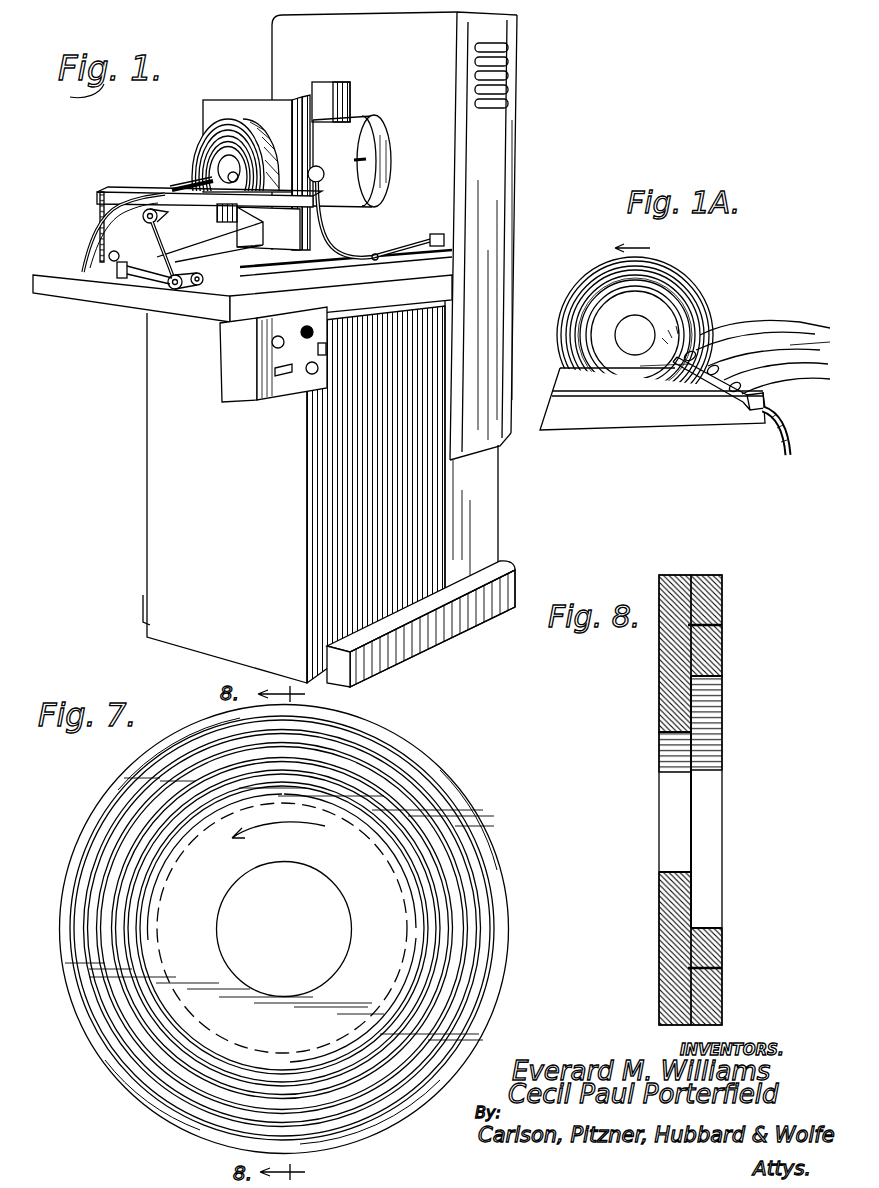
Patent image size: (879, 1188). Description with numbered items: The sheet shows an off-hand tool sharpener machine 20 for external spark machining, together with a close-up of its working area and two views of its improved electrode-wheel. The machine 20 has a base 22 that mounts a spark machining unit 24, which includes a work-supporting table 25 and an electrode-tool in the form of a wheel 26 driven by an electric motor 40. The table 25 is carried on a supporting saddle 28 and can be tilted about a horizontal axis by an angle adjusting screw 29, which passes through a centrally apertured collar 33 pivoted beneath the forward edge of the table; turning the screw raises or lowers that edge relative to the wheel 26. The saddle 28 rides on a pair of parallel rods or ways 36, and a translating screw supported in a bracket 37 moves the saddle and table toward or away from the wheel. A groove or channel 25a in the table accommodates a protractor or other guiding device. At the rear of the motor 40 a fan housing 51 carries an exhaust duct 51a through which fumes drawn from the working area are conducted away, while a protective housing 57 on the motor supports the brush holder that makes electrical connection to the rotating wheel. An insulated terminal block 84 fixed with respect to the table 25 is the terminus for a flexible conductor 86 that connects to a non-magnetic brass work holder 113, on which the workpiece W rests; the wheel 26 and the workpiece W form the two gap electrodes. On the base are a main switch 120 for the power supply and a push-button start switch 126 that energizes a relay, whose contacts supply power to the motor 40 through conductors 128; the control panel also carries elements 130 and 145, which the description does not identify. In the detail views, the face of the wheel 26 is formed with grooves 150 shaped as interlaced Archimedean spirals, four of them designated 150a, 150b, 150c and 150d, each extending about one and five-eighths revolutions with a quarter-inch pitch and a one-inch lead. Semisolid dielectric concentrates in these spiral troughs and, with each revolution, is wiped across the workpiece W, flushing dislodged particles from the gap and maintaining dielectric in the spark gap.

In FIG. 1, the machine 20 is at (87, 317).
In FIG. 1, the base 22 is at (160, 419).
In FIG. 1, the spark machining unit 24 is at (178, 153).
In FIG. 1, the work-supporting table 25 is at (137, 188).
In FIG. 1A, the work-supporting table 25 is at (652, 414).
In FIG. 1A, the groove or channel 25a is at (607, 393).
In FIG. 1, the electrode-wheel 26 is at (203, 135).
In FIG. 1A, the electrode-wheel 26 is at (663, 263).
In FIG. 7, the electrode-wheel 26 is at (404, 745).
In FIG. 8, the electrode-wheel 26 is at (660, 697).
In FIG. 1, the saddle 28 is at (228, 233).
In FIG. 1, the angle adjusting screw 29 is at (162, 240).
In FIG. 1, the centrally apertured collar 33 is at (163, 213).
In FIG. 1, the rods or ways 36 is at (157, 287).
In FIG. 1, the bracket 37 is at (112, 280).
In FIG. 1, the electric motor 40 is at (366, 157).
In FIG. 1, the fan housing 51 is at (388, 167).
In FIG. 1, the exhaust duct 51a is at (343, 97).
In FIG. 1, the protective housing 57 is at (243, 107).
In FIG. 1, the insulated terminal block 84 is at (102, 192).
In FIG. 1, the flexible conductor 86 is at (102, 230).
In FIG. 1A, the flexible conductor 86 is at (777, 440).
In FIG. 1, the work holder 113 is at (190, 182).
In FIG. 1A, the work holder 113 is at (722, 403).
In FIG. 1, the main switch 120 is at (327, 342).
In FIG. 1, the start switch 126 is at (270, 347).
In FIG. 1, the conductors 128 is at (430, 247).
In FIG. 1, the slot 130 is at (278, 378).
In FIG. 1, the knob 145 is at (312, 376).
In FIG. 1A, the grooves 150 is at (673, 287).
In FIG. 7, the grooves 150 is at (391, 868).
In FIG. 7, the spiral groove 150a is at (163, 752).
In FIG. 8, the spiral groove 150a is at (660, 983).
In FIG. 7, the spiral groove 150b is at (461, 808).
In FIG. 8, the spiral groove 150b is at (660, 998).
In FIG. 7, the spiral groove 150c is at (380, 1120).
In FIG. 8, the spiral groove 150c is at (660, 1012).
In FIG. 7, the spiral groove 150d is at (120, 1065).
In FIG. 8, the spiral groove 150d is at (660, 968).
In FIG. 1A, the workpiece W is at (676, 373).